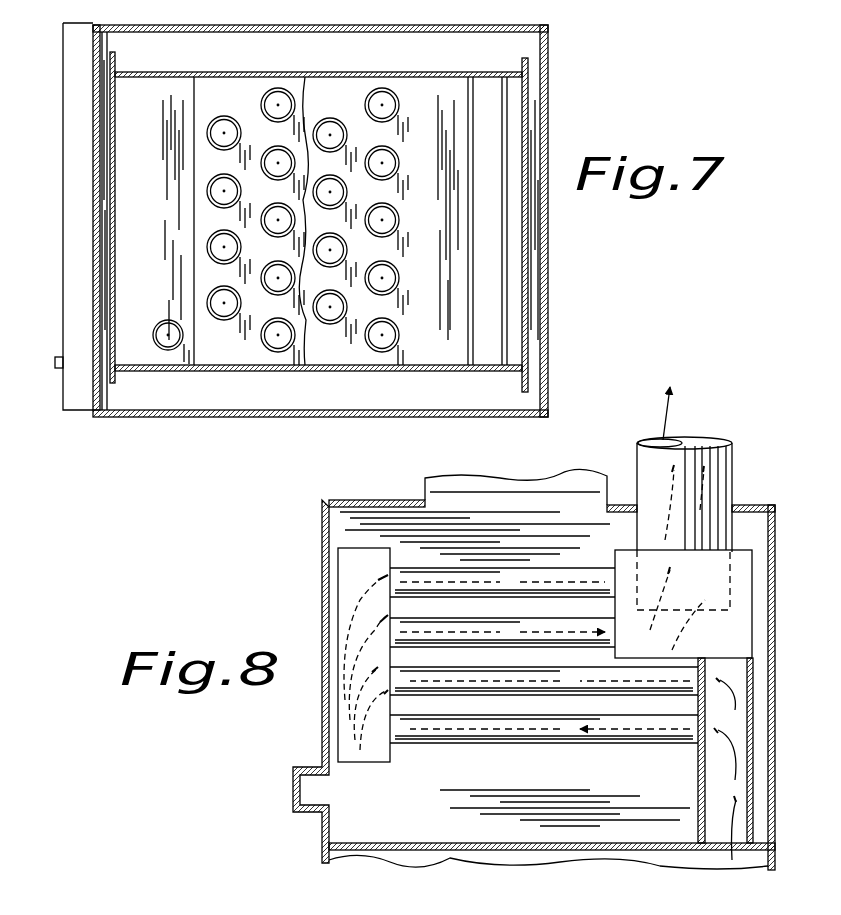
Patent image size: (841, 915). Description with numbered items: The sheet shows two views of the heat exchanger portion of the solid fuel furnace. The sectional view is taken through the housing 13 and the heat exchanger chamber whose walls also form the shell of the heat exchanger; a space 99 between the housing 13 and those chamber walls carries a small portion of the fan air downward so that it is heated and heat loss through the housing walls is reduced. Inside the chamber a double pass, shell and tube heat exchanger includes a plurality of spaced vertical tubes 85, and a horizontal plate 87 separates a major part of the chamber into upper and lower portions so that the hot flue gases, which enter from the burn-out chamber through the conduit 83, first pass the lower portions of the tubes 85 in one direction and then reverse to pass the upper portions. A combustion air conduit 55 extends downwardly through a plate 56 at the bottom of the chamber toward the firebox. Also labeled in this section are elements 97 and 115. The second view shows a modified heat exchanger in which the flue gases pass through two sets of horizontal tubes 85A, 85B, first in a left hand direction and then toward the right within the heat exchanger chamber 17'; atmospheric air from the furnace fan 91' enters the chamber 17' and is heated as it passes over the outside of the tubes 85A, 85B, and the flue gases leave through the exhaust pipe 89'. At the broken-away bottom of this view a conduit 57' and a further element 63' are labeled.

In FIG. 7, the housing 13 is at (205, 413).
In FIG. 8, the housing 13 is at (323, 738).
In FIG. 8, the heat exchanger chamber 17' is at (316, 623).
In FIG. 7, the conduit 55 is at (165, 350).
In FIG. 7, the plate 56 is at (138, 212).
In FIG. 8, the burner 57' is at (232, 897).
In FIG. 8, the combustion chamber 63' is at (109, 899).
In FIG. 7, the conduit 83 is at (478, 123).
In FIG. 8, the conduit 83 is at (700, 778).
In FIG. 7, the vertical tubes 85 is at (335, 120).
In FIG. 8, the horizontal tubes 85A is at (465, 738).
In FIG. 8, the horizontal tubes 85B is at (475, 625).
In FIG. 7, the horizontal plate 87 is at (232, 92).
In FIG. 8, the exhaust pipe 89' is at (716, 522).
In FIG. 8, the furnace fan 91' is at (532, 448).
In FIG. 7, the partition plate 97 is at (428, 263).
In FIG. 7, the space 99 is at (165, 48).
In FIG. 7, the drain fitting 115 is at (55, 362).